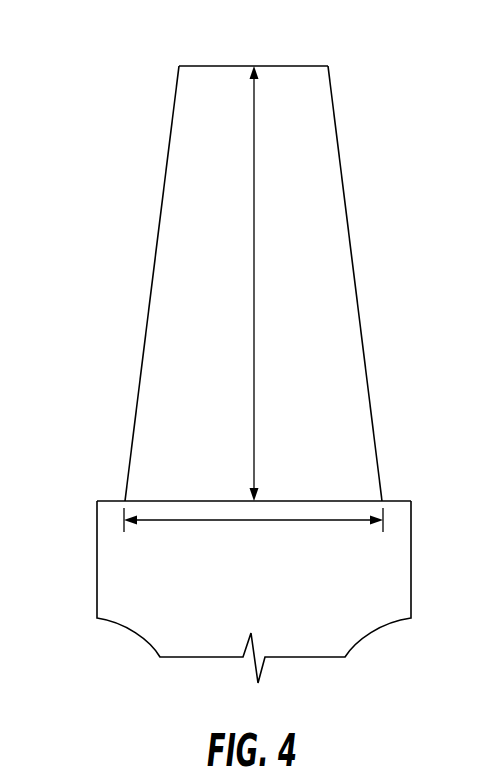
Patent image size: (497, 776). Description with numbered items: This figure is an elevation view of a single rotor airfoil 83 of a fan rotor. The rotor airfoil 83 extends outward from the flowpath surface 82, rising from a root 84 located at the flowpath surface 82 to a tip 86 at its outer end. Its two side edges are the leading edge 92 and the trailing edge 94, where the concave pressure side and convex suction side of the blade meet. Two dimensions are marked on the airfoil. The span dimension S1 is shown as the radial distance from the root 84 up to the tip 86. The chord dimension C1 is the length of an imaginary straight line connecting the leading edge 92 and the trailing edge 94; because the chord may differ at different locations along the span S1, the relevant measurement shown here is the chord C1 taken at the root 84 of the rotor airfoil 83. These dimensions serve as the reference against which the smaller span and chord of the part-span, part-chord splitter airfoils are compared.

The rotor airfoil 83 is at (385, 110).
The tip 86 is at (280, 66).
The leading edge 92 is at (153, 268).
The trailing edge 94 is at (346, 204).
The flowpath surface 82 is at (104, 493).
The root 84 is at (320, 501).
The span dimension S1 is at (253, 250).
The chord dimension C1 is at (250, 521).